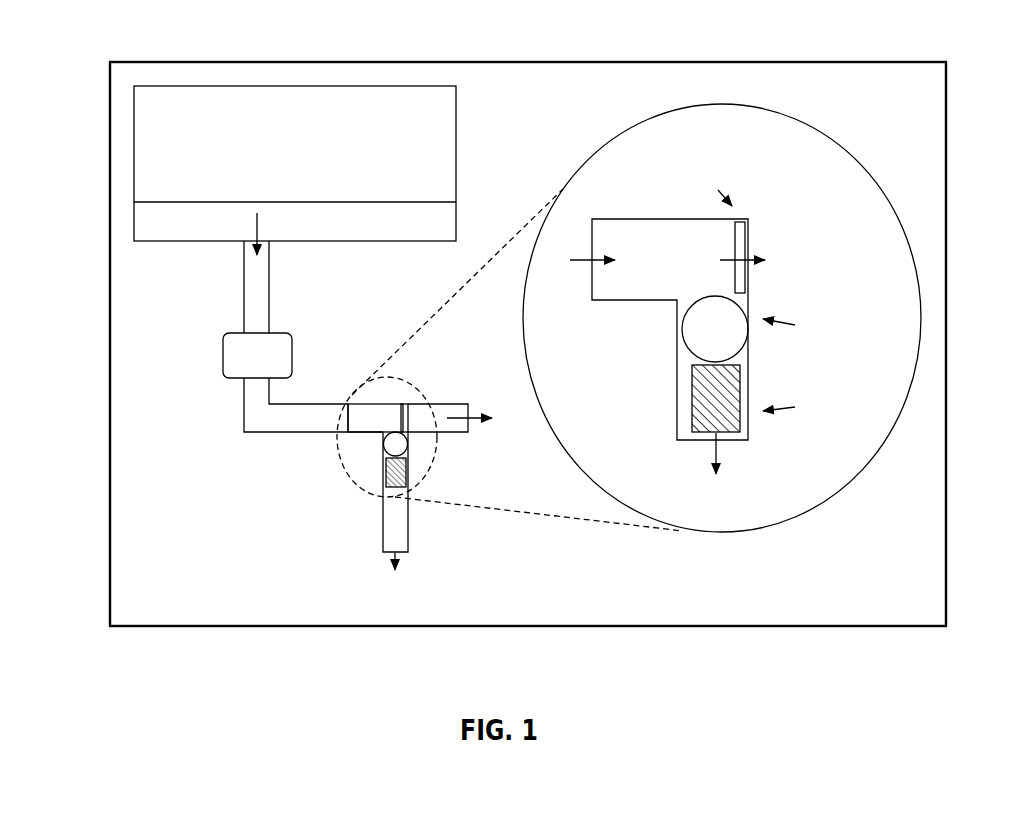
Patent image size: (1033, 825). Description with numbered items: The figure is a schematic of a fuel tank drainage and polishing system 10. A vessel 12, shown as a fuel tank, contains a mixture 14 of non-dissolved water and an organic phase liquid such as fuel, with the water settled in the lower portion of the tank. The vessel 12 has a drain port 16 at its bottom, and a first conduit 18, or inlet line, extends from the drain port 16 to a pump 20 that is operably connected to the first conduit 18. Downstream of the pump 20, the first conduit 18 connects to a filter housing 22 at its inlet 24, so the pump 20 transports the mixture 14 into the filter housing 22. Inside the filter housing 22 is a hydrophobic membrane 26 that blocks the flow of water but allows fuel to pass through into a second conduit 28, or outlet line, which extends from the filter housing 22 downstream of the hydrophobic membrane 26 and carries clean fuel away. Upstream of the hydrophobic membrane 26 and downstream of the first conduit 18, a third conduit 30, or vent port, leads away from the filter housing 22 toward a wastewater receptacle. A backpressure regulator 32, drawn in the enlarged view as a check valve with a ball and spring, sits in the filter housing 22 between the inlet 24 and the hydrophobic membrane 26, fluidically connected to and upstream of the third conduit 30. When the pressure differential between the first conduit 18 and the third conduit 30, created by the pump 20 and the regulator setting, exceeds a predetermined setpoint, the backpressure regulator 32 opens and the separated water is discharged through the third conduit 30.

The system 10 is at (100, 376).
The vessel 12 is at (160, 62).
The mixture 14 is at (153, 200).
The drain port 16 is at (269, 250).
The first conduit 18 is at (244, 292).
The pump 20 is at (223, 360).
The filter housing 22 is at (350, 404).
The inlet 24 is at (348, 427).
The hydrophobic membrane 26 is at (407, 404).
The second conduit 28 is at (458, 412).
The third conduit 30 is at (385, 493).
The backpressure regulator 32 is at (410, 447).